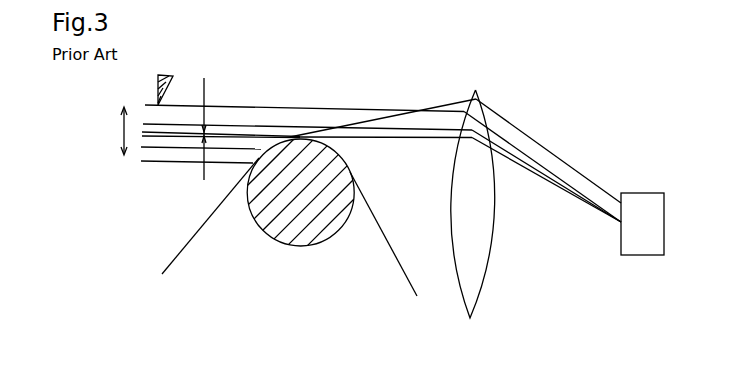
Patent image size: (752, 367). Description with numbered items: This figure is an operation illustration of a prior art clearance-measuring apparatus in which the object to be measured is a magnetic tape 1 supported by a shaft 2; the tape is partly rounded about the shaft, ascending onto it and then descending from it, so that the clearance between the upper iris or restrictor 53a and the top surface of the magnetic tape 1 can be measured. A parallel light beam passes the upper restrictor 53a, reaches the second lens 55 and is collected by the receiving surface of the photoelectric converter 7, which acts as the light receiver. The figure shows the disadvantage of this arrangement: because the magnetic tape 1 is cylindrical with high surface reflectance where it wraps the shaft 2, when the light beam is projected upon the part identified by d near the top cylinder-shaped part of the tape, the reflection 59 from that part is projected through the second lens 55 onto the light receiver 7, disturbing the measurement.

The magnetic tape 1 is at (171, 263).
The shaft 2 is at (282, 246).
The photoelectric converter 7 is at (636, 192).
The upper restrictor 53a is at (172, 77).
The second lens 55 is at (488, 260).
The reflection 59 is at (450, 100).
The part near the top cylinder-shaped part of the magnetic tape d is at (210, 128).